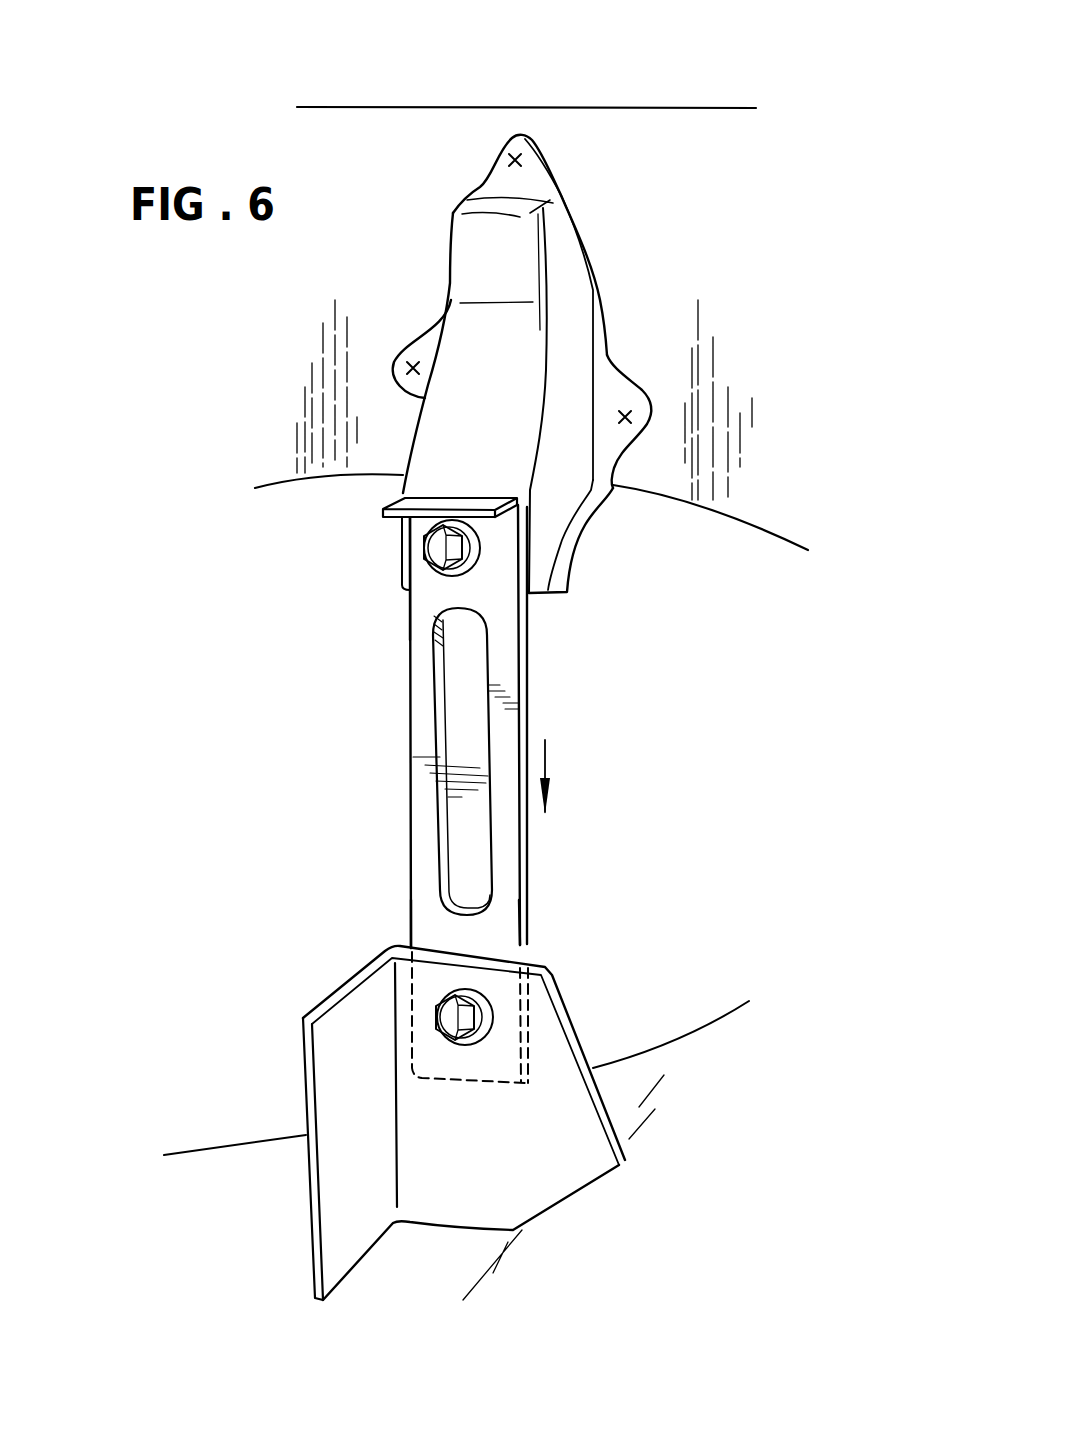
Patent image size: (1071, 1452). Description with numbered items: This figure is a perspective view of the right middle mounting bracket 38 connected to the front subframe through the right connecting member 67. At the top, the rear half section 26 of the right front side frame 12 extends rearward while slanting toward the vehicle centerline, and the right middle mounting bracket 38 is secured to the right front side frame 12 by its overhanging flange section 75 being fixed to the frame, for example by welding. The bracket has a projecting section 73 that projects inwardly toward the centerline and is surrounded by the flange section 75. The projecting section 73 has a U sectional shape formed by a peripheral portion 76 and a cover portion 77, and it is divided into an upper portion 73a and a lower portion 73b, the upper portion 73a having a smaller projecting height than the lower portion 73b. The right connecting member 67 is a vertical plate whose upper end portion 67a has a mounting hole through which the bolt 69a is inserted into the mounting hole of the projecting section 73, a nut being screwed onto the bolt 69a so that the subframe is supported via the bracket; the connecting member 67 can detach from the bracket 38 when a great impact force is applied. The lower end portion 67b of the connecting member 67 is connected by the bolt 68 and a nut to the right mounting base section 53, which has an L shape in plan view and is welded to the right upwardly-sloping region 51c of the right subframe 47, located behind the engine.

The right front side frame 12 is at (363, 105).
The rear half section 26 is at (608, 130).
The right middle mounting bracket 38 is at (612, 263).
The projecting section 73 is at (447, 398).
The upper portion 73a is at (472, 245).
The lower portion 73b is at (402, 537).
The cover portion 77 is at (473, 383).
The flange section 75 is at (590, 323).
The peripheral portion 76 is at (565, 407).
The bolt 69a is at (432, 553).
The right connecting member 67 is at (417, 737).
The upper end portion 67a is at (418, 607).
The lower end portion 67b is at (507, 940).
The bolt 68 is at (447, 1030).
The right mounting base section 53 is at (563, 1177).
The right upwardly-sloping region 51c is at (618, 1090).
The right subframe 47 is at (233, 1171).